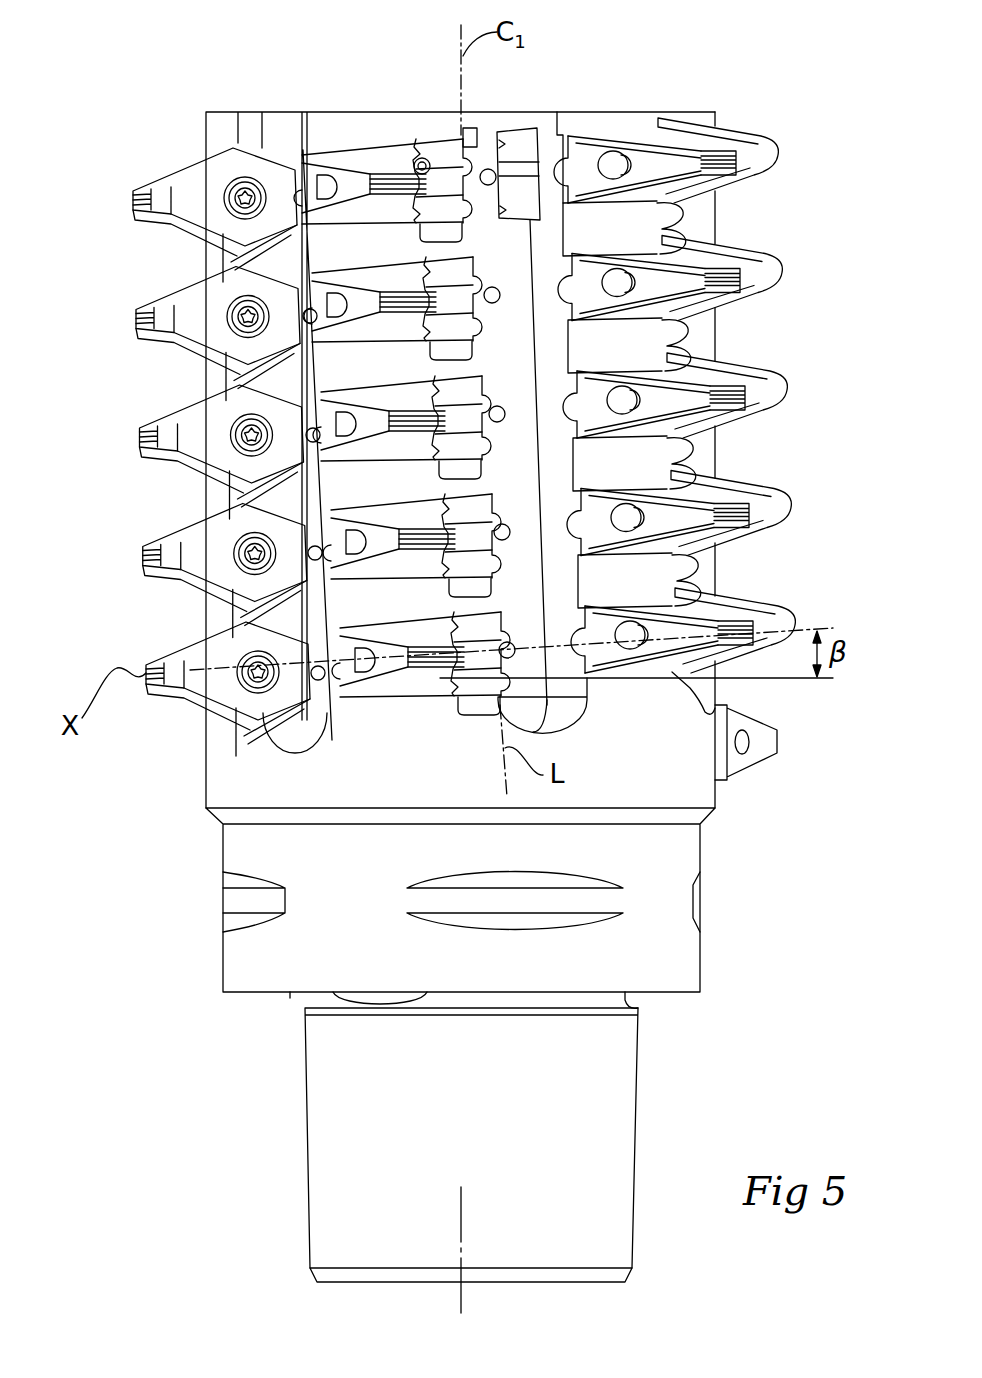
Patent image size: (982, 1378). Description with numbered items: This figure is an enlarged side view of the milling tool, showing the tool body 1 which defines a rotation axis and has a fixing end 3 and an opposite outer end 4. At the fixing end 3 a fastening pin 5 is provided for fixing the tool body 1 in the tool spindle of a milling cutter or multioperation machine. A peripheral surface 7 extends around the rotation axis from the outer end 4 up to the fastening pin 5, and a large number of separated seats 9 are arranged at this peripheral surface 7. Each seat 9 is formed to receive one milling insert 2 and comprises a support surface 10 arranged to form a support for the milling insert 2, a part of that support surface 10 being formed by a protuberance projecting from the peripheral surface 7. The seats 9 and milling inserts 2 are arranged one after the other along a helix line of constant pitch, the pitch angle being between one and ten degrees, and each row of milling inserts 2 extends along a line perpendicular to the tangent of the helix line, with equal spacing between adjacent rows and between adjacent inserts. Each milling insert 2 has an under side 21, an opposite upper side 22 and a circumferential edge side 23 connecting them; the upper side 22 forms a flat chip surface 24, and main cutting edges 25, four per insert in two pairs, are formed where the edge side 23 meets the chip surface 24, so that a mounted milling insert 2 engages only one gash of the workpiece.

The tool body 1 is at (212, 268).
The milling insert 2 is at (193, 428).
The fixing end 3 is at (335, 1288).
The outer end 4 is at (430, 409).
The fastening pin 5 is at (330, 1137).
The peripheral surface 7 is at (675, 775).
The seat 9 is at (420, 138).
The support surface 10 is at (430, 157).
The under side 21 is at (481, 150).
The upper side 22 is at (542, 157).
The edge side 23 is at (522, 137).
The chip surface 24 is at (188, 312).
The main cutting edge 25 is at (178, 350).